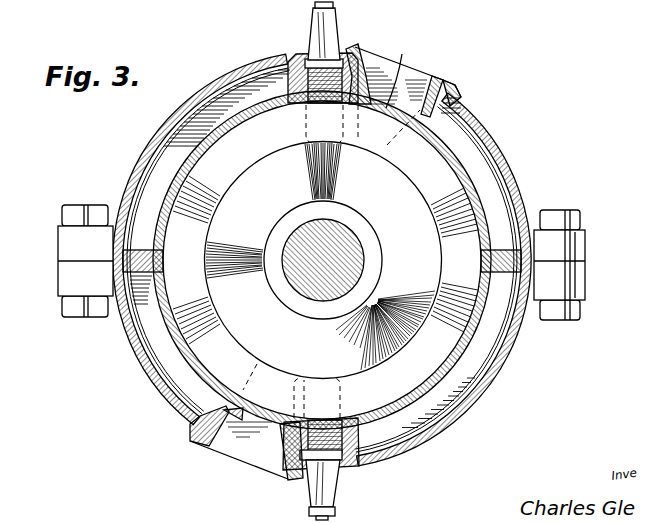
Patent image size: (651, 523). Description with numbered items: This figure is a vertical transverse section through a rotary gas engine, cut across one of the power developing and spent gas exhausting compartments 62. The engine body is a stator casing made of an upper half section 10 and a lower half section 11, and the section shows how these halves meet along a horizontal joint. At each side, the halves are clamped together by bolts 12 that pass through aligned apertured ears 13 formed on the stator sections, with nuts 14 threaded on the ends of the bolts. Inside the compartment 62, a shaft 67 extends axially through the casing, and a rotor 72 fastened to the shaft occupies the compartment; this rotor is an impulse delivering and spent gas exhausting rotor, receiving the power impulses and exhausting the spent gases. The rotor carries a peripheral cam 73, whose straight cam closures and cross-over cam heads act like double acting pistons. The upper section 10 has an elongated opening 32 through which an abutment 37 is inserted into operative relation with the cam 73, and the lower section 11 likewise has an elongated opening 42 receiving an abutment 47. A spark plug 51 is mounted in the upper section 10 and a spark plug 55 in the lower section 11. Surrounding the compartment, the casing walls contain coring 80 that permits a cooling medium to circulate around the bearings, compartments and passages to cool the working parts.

The upper half section of the stator casing 10 is at (231, 73).
The lower half section of the stator casing 11 is at (396, 461).
The bolts 12 is at (572, 210).
The apertured ears 13 is at (578, 283).
The nuts 14 is at (578, 312).
The elongated opening 32 is at (422, 77).
The abutment 37 is at (403, 52).
The elongated opening 42 is at (243, 452).
The abutment 47 is at (251, 442).
The spark plug 51 is at (334, 30).
The spark plug 55 is at (312, 485).
The power developing and spent gas exhausting compartment 62 is at (172, 216).
The shaft 67 is at (345, 240).
The impulse delivering and spent gas exhausting rotor 72 is at (365, 340).
The peripheral cam 73 is at (236, 166).
The coring 80 is at (178, 138).